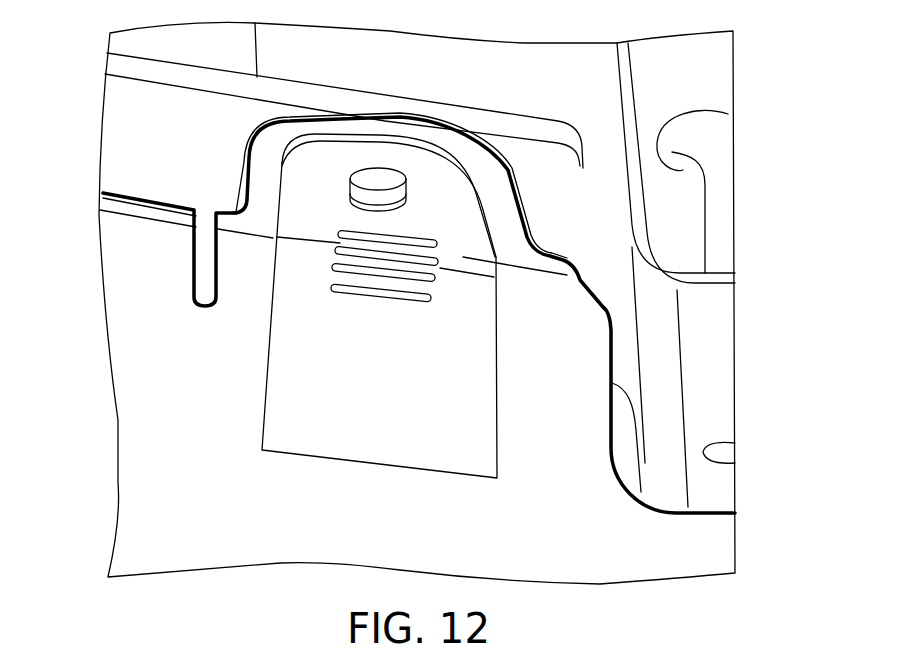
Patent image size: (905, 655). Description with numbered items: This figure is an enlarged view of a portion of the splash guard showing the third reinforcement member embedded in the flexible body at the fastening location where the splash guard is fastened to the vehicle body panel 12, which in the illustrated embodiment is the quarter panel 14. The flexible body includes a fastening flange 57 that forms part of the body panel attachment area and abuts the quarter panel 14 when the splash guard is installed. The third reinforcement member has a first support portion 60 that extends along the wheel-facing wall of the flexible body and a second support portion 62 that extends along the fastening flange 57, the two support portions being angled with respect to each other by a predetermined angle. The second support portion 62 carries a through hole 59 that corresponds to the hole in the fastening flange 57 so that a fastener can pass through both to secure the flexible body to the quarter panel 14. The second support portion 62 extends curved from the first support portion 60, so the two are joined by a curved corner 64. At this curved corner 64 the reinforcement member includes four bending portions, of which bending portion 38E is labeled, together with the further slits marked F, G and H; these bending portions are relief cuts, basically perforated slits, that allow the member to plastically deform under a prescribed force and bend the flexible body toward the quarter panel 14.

The vehicle body panel 12 is at (532, 33).
The quarter panel 14 is at (137, 146).
The fastening flange 57 is at (523, 212).
The through hole 59 is at (387, 178).
The first support portion 60 is at (498, 427).
The second support portion 62 is at (298, 122).
The curved corner 64 is at (270, 241).
The bending portion 38E is at (384, 284).
The slot position F is at (436, 279).
The slot position G is at (440, 262).
The slot position H is at (352, 231).